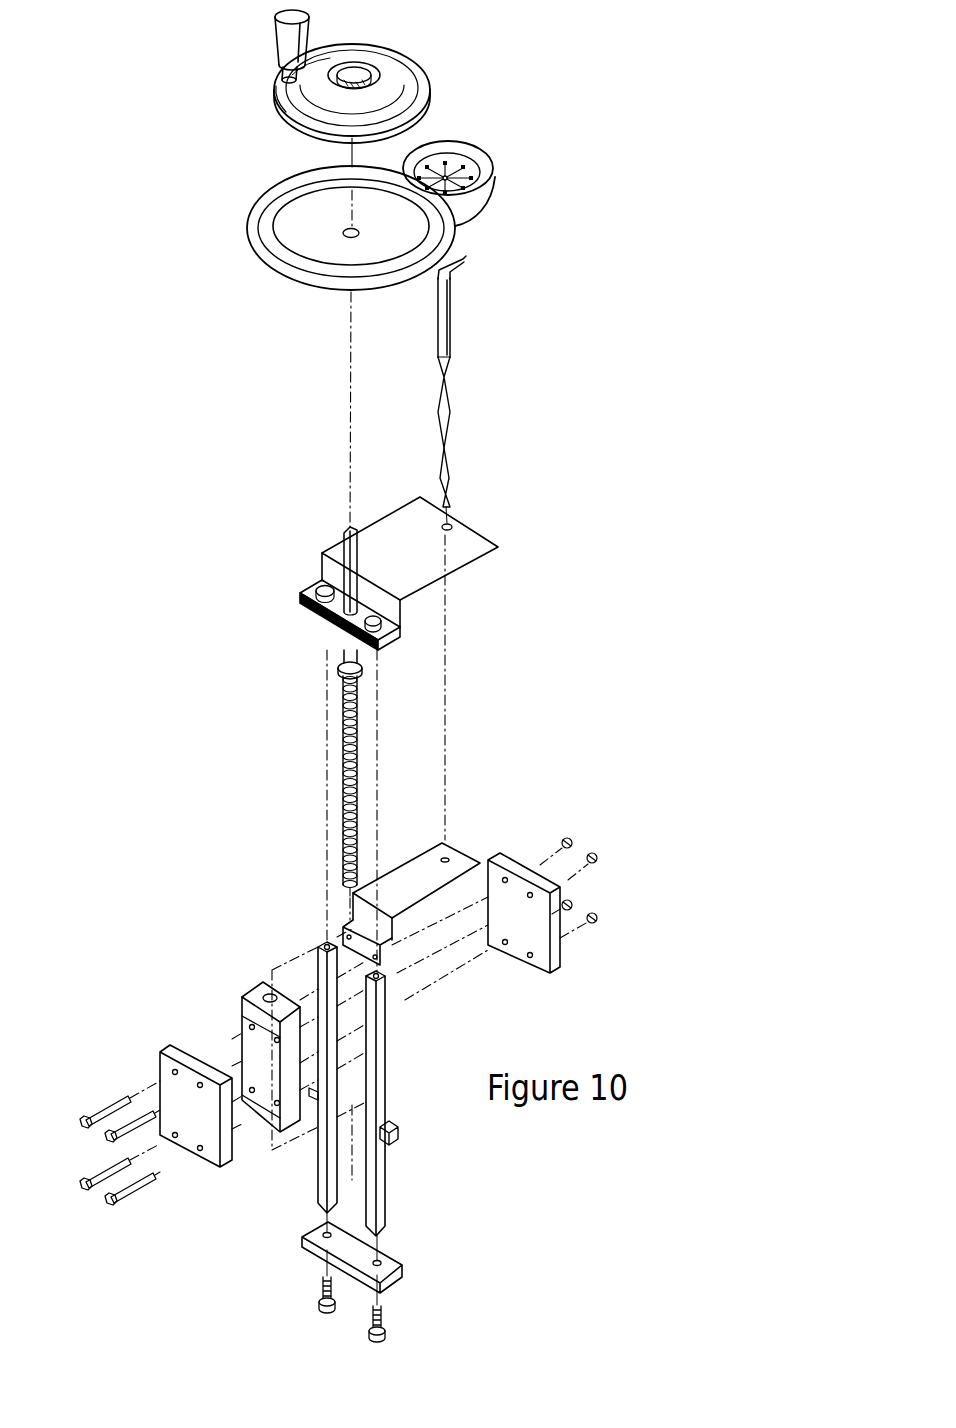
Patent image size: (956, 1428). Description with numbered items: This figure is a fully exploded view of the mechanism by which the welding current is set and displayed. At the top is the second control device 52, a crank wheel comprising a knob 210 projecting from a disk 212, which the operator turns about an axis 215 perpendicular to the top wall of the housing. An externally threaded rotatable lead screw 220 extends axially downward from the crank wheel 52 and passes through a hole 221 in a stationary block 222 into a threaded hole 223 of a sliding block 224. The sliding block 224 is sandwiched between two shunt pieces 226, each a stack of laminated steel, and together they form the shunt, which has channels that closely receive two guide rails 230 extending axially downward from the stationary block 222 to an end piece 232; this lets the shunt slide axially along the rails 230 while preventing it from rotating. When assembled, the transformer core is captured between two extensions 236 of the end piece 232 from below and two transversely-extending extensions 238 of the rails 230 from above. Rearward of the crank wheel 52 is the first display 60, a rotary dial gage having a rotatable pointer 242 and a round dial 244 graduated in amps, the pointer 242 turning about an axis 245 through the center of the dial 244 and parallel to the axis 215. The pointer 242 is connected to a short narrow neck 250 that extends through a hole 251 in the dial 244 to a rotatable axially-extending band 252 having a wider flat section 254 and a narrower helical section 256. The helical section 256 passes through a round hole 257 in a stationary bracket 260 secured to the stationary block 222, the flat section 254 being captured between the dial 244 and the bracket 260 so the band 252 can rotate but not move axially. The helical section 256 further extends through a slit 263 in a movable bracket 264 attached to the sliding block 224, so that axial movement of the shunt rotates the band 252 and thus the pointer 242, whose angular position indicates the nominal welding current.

The knob 210 is at (283, 36).
The disk 212 is at (393, 64).
The second control device 52 is at (305, 106).
The hole in the dial 251 is at (445, 176).
The first display 60 is at (476, 142).
The dial 244 is at (490, 172).
The pointer 242 is at (458, 258).
The neck 250 is at (452, 277).
The band 252 is at (466, 329).
The flat section 254 is at (452, 343).
The helical section 256 is at (449, 417).
The round hole 257 is at (468, 514).
The axis 215 is at (350, 378).
The stationary bracket 260 is at (447, 557).
The hole 221 is at (318, 585).
The stationary block 222 is at (302, 607).
The axis 245 is at (447, 668).
The lead screw 220 is at (343, 765).
The slit 263 is at (456, 842).
The movable bracket 264 is at (463, 858).
The shunt pieces 226 is at (508, 866).
The threaded hole 223 is at (258, 990).
The sliding block 224 is at (244, 1005).
The guide rails 230 is at (373, 1188).
The transversely-extending extensions 238 is at (396, 1137).
The end piece 232 is at (310, 1250).
The extensions 236 is at (392, 1276).